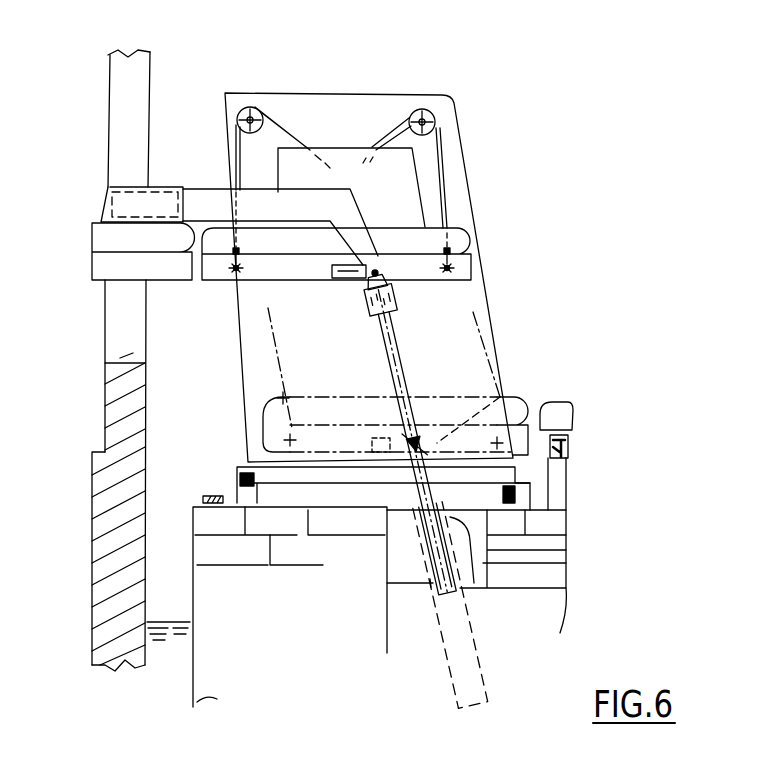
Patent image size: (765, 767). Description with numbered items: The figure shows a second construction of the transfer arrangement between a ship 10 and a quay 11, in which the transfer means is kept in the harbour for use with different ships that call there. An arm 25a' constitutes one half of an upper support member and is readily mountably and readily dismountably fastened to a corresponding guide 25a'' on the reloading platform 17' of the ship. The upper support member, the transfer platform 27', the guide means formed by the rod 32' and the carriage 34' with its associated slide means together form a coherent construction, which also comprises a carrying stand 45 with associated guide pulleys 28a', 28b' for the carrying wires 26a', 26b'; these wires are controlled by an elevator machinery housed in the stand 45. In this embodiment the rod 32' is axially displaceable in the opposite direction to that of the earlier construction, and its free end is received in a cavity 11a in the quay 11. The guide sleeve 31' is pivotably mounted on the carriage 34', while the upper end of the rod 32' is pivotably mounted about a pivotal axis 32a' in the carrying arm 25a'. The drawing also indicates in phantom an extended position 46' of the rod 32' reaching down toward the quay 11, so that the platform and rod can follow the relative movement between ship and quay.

The ship 10 is at (147, 470).
The quay 11 is at (192, 590).
The cavity in the quay 11a is at (566, 550).
The reloading platform 17' is at (129, 276).
The carrying arm 25a' is at (275, 204).
The guide 25a'' is at (118, 182).
The carrying wire 26a' is at (305, 122).
The carrying wire 26b' is at (445, 173).
The transfer platform 27' is at (370, 323).
The guide pulley 28a' is at (273, 94).
The guide pulley 28b' is at (443, 95).
The guide sleeve 31' is at (464, 559).
The rod 32' is at (411, 434).
The pivotal axis 32a' is at (371, 232).
The carriage 34' is at (349, 483).
The carrying stand 45 is at (478, 293).
The rod extension 46' is at (470, 605).